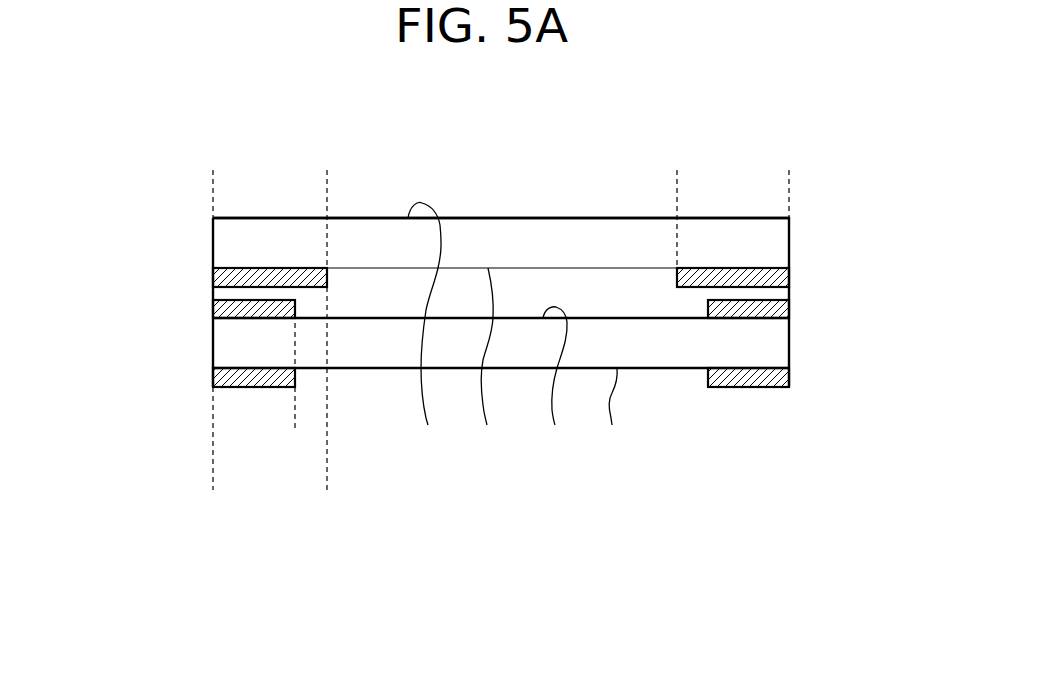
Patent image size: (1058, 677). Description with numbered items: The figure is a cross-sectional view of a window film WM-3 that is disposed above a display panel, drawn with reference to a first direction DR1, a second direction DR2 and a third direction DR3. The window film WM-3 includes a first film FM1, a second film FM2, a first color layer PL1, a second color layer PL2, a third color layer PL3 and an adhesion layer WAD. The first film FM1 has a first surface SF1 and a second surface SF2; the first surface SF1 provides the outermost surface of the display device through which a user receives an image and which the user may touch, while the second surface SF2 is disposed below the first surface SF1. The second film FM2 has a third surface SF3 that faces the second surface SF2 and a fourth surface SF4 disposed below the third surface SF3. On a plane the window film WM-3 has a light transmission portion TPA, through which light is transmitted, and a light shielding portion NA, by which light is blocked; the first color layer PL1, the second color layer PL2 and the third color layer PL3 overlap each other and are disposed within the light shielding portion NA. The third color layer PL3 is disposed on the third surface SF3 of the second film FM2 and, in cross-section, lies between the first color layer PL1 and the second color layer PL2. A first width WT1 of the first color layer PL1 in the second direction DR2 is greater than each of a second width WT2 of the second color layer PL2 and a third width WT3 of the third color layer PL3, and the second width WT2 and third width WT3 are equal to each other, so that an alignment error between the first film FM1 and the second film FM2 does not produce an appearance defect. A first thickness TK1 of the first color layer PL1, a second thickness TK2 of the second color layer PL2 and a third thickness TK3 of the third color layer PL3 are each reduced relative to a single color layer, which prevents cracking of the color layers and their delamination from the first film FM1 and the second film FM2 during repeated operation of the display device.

The window film WM-3 is at (758, 127).
The first film FM1 is at (780, 246).
The first color layer PL1 is at (775, 278).
The adhesion layer WAD is at (785, 297).
The third color layer PL3 is at (780, 313).
The second film FM2 is at (780, 350).
The second color layer PL2 is at (785, 376).
The first surface SF1 is at (427, 330).
The second surface SF2 is at (488, 362).
The third surface SF3 is at (553, 382).
The fourth surface SF4 is at (611, 412).
The light shielding portion NA is at (789, 184).
The light transmission portion TPA is at (677, 184).
The first thickness TK1 is at (213, 287).
The second thickness TK2 is at (213, 387).
The third thickness TK3 is at (708, 300).
The first width WT1 is at (327, 480).
The second width WT2 is at (295, 423).
The third width WT3 is at (281, 445).
The first direction DR1 is at (92, 582).
The second direction DR2 is at (101, 567).
The third direction DR3 is at (91, 563).